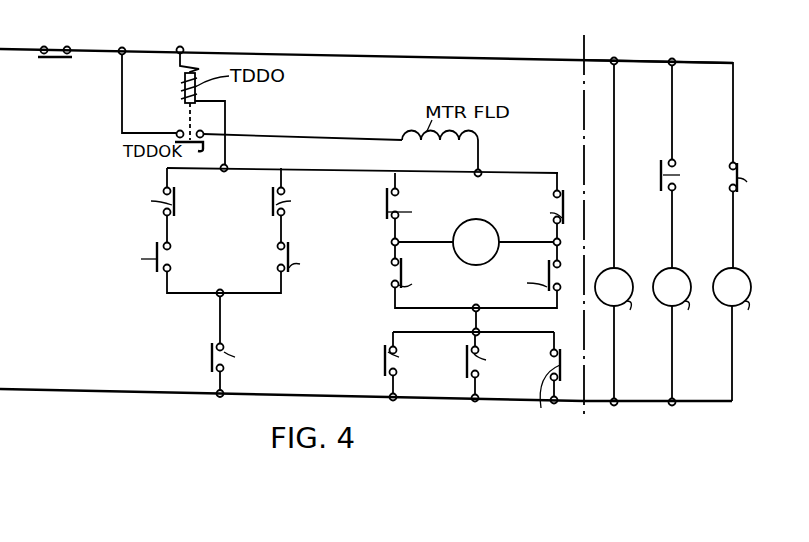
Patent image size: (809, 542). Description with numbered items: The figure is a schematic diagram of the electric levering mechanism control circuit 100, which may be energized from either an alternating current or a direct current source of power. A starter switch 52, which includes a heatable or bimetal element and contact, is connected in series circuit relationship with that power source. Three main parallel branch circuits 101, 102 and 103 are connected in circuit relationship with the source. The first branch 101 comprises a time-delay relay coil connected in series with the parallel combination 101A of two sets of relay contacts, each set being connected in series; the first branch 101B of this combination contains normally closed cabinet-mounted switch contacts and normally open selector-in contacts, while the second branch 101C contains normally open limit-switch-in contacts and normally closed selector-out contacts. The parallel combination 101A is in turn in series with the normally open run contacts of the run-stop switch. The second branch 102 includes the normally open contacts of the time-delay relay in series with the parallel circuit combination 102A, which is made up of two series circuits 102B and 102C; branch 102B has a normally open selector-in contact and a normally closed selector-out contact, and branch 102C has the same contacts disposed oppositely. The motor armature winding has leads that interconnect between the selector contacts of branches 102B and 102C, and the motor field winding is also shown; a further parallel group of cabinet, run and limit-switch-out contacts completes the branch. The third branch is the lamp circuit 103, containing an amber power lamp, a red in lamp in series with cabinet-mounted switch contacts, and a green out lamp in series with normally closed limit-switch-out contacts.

The electric levering mechanism circuit 100 is at (382, 48).
The starter switch 52 is at (59, 58).
The first parallel branch circuit 101 is at (216, 295).
The parallel combination 101A is at (237, 204).
The first branch of parallel circuit 101A 101B is at (150, 239).
The second branch of parallel circuit 101A 101C is at (325, 241).
The second parallel branch circuit 102 is at (463, 303).
The parallel circuit combination 102A is at (500, 226).
The first series branch circuit 102B is at (458, 308).
The second parallel branch 102C is at (544, 190).
The lamp circuit 103 is at (693, 430).